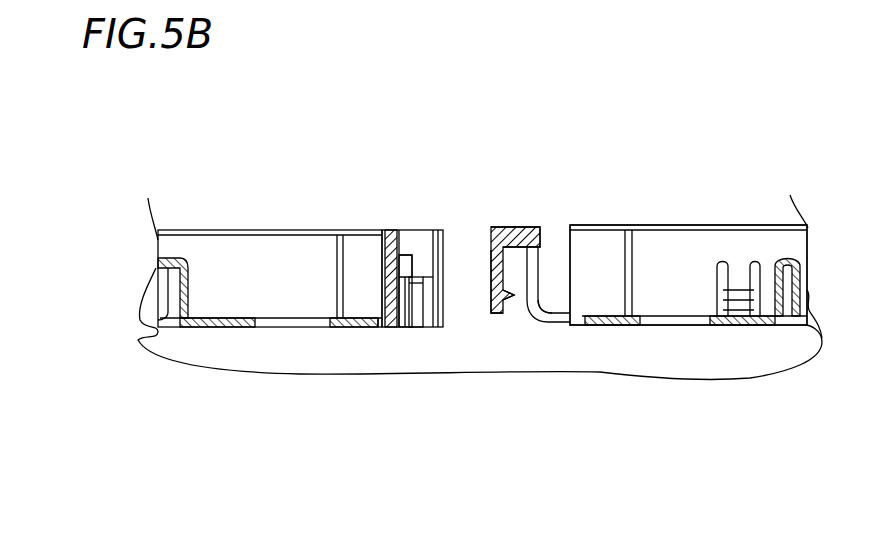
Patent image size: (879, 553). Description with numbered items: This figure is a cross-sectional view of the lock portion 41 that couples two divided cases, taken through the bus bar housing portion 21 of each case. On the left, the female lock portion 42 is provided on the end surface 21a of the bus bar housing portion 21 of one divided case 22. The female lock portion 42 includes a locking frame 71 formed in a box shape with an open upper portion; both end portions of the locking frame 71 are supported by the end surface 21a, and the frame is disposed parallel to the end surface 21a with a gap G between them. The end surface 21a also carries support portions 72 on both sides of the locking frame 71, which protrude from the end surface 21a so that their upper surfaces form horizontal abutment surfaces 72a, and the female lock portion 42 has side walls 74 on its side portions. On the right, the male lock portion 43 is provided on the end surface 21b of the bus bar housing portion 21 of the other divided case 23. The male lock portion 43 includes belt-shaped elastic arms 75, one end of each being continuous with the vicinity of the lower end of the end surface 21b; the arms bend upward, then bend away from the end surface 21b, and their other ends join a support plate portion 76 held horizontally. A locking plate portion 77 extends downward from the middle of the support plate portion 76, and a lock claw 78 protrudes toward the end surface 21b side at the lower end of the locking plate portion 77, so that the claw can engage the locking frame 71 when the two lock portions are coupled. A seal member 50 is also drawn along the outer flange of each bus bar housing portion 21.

The bus bar housing portion 21 is at (290, 230).
The end surface 21a is at (406, 327).
The end surface 21b is at (565, 290).
The divided case 22 is at (488, 203).
The divided case 23 is at (738, 220).
The lock portion 41 is at (481, 250).
The female lock portion 42 is at (424, 271).
The male lock portion 43 is at (539, 271).
The seal flange 50 is at (240, 304).
The locking frame 71 is at (434, 327).
The support portion 72 is at (395, 229).
The abutment surface 72a is at (412, 230).
The side wall 74 is at (432, 272).
The elastic arm 75 is at (543, 327).
The support plate portion 76 is at (502, 230).
The locking plate portion 77 is at (491, 270).
The lock claw 78 is at (510, 300).
The gap G is at (380, 303).